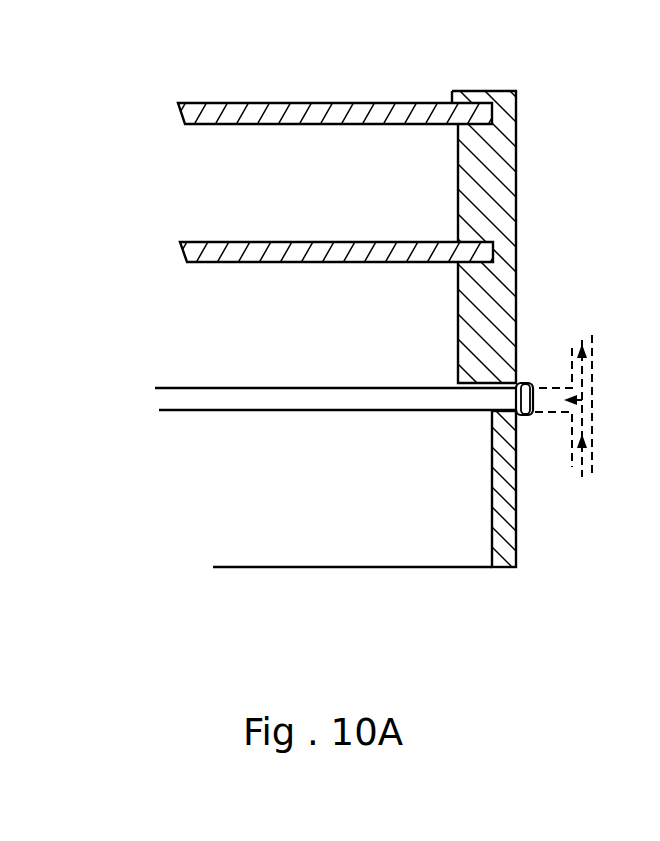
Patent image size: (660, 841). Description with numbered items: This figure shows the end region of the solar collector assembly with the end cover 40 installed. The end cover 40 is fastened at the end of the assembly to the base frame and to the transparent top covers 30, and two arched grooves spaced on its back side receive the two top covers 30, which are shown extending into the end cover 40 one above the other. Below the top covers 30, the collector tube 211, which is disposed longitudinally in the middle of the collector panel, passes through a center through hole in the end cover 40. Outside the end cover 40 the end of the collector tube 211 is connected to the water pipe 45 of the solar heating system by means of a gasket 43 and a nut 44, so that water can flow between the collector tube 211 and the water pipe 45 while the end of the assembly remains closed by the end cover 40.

The transparent top covers 30 is at (340, 107).
The end cover 40 is at (517, 163).
The collector tube 211 is at (293, 411).
The gasket 43 is at (520, 418).
The nut 44 is at (527, 383).
The water pipe 45 is at (590, 385).